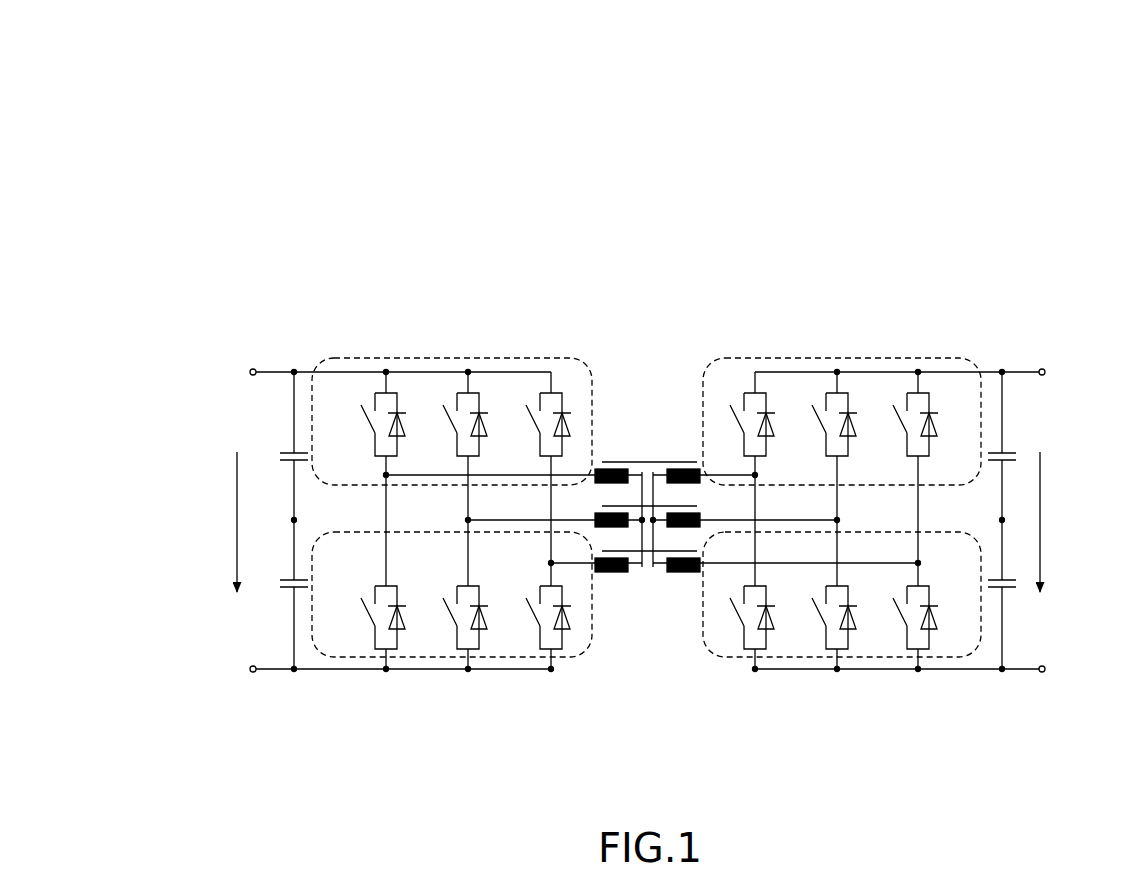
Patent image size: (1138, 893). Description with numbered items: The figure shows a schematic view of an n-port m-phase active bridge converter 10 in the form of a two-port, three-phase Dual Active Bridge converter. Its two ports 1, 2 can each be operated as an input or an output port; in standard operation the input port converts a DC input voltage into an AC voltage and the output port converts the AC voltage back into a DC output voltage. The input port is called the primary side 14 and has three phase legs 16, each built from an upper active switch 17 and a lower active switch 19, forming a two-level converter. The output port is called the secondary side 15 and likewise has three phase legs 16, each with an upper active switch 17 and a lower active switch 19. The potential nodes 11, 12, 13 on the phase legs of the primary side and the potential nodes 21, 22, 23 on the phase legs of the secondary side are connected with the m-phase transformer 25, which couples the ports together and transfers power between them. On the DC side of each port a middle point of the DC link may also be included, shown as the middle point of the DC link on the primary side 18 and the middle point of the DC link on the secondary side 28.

The port 1 is at (580, 227).
The port 2 is at (967, 227).
The n-port m-phase active bridge converter 10 is at (648, 160).
The potential node 11 is at (384, 475).
The potential node 12 is at (466, 520).
The potential node 13 is at (549, 563).
The primary side 14 is at (312, 340).
The secondary side 15 is at (977, 338).
The phase leg 16 is at (548, 675).
The upper active switch 17 is at (578, 347).
The middle point of the DC link on the primary side 18 is at (286, 520).
The lower active switch 19 is at (572, 663).
The potential node 21 is at (758, 475).
The potential node 22 is at (840, 520).
The potential node 23 is at (921, 563).
The m-phase transformer 25 is at (645, 576).
The middle point of the DC link on the secondary side 28 is at (1009, 520).